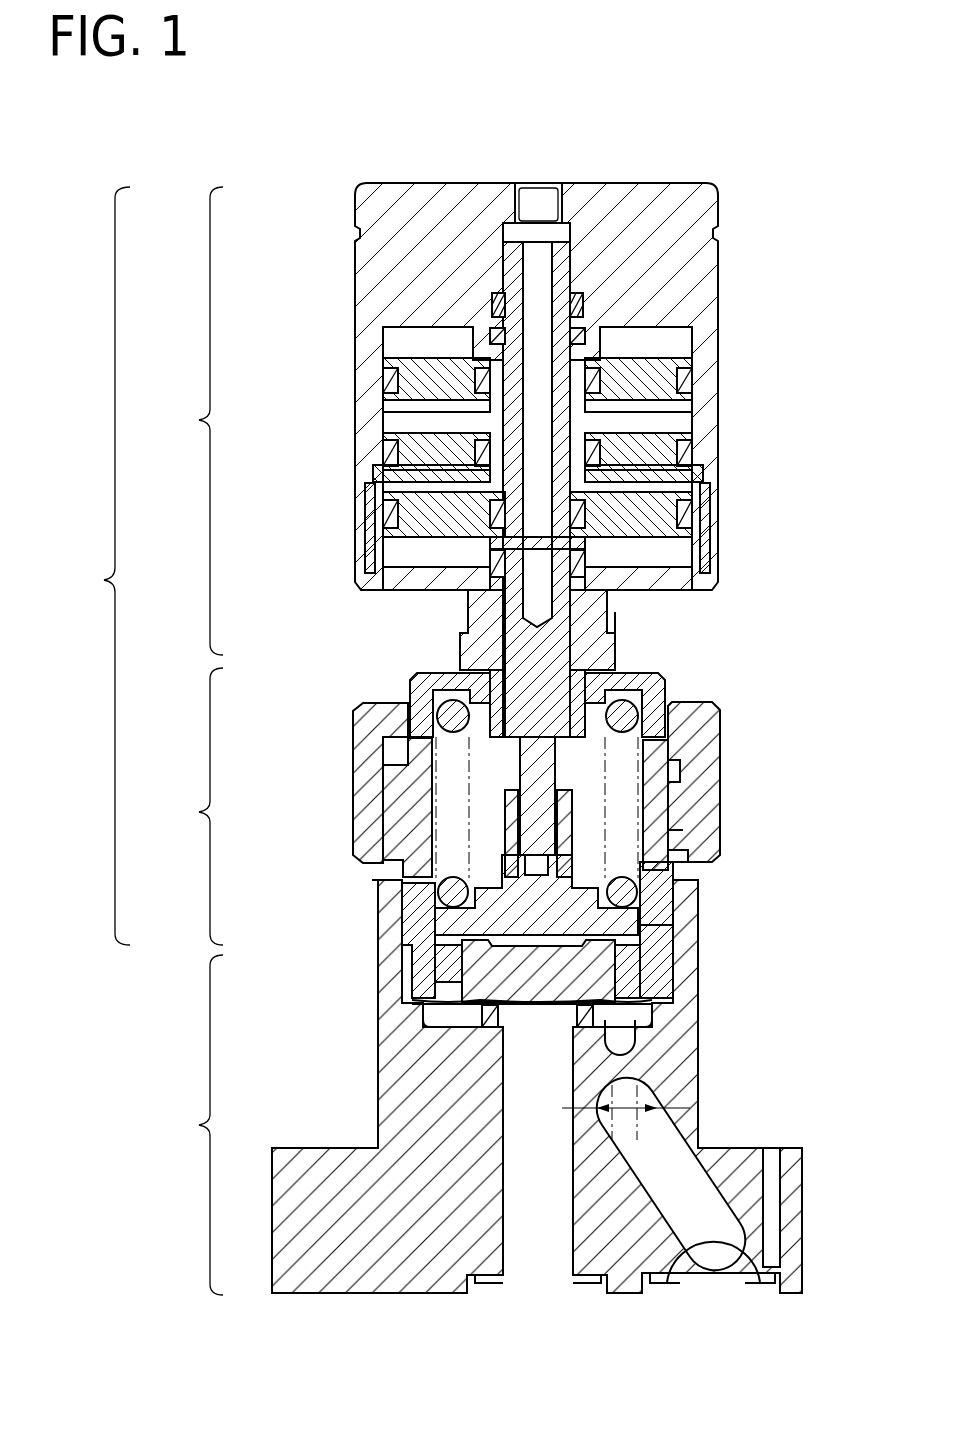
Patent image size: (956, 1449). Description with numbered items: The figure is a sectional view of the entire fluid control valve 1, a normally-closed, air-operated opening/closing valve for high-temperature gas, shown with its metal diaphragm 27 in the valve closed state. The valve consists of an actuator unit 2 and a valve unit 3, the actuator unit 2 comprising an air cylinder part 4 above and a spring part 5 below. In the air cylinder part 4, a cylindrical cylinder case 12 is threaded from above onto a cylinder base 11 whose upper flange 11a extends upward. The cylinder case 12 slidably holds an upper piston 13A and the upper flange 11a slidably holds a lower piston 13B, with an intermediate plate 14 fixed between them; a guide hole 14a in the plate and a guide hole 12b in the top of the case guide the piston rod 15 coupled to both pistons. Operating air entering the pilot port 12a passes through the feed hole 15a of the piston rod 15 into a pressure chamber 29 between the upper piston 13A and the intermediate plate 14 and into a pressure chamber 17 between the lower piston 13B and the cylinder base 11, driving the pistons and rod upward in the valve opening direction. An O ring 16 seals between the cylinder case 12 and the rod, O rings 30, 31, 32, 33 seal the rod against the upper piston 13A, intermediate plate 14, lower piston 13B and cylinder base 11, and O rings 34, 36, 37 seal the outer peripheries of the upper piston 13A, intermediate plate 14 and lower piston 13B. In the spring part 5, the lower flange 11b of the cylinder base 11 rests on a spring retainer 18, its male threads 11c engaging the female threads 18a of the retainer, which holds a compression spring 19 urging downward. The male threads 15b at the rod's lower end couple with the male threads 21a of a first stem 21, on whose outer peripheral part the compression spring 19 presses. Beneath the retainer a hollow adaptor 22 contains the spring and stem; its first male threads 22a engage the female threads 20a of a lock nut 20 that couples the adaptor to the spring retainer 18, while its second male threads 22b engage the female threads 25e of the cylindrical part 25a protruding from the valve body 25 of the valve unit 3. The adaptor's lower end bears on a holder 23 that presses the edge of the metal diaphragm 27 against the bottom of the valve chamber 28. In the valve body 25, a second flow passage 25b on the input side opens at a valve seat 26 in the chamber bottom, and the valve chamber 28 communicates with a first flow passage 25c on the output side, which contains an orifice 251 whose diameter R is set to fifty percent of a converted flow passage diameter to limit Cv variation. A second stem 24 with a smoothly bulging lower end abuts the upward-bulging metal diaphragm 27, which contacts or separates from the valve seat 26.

The fluid control valve 1 is at (750, 171).
The actuator unit 2 is at (107, 566).
The valve unit 3 is at (197, 1125).
The air cylinder part 4 is at (197, 421).
The spring part 5 is at (197, 806).
The cylinder base 11 is at (610, 605).
The upper flange 11a is at (368, 545).
The lower flange 11b is at (612, 625).
The male threads 11c is at (497, 680).
The cylinder case 12 is at (647, 217).
The pilot port 12a is at (525, 193).
The guide hole 12b is at (558, 200).
The upper piston 13A is at (640, 362).
The lower piston 13B is at (655, 505).
The intermediate plate 14 is at (640, 445).
The guide hole 14a is at (485, 374).
The piston rod 15 is at (582, 335).
The feed hole 15a is at (513, 248).
The male threads 15b is at (547, 827).
The O ring 16 is at (494, 300).
The pressure chamber 17 is at (665, 578).
The spring retainer 18 is at (650, 692).
The female threads 18a is at (488, 735).
The compression spring 19 is at (653, 675).
The lock nut 20 is at (705, 733).
The female threads 20a is at (690, 868).
The first stem 21 is at (677, 808).
The male threads 21a is at (683, 770).
The adaptor 22 is at (662, 890).
The first male threads 22a is at (693, 835).
The second male threads 22b is at (672, 930).
The holder 23 is at (634, 998).
The second stem 24 is at (650, 958).
The valve body 25 is at (627, 1247).
The cylindrical part 25a is at (383, 975).
The second flow passage 25b is at (507, 1232).
The first flow passage 25c is at (702, 1240).
The female threads 25e is at (375, 893).
The orifice 251 is at (634, 1022).
The valve seat 26 is at (575, 1012).
The metal diaphragm 27 is at (445, 1012).
The valve chamber 28 is at (462, 1032).
The pressure chamber 29 is at (640, 408).
The O ring 30 is at (492, 338).
The O ring 31 is at (475, 470).
The O ring 32 is at (492, 562).
The O ring 33 is at (492, 546).
The O ring 34 is at (690, 378).
The O ring 36 is at (696, 472).
The O ring 37 is at (690, 512).
The diameter of the orifice R is at (626, 1117).